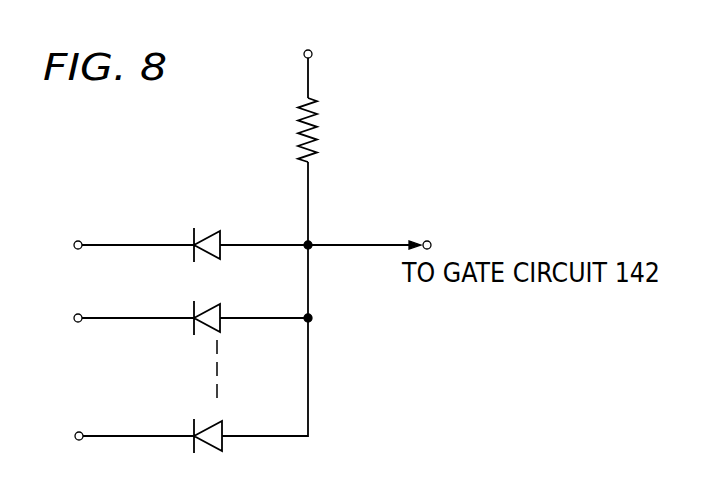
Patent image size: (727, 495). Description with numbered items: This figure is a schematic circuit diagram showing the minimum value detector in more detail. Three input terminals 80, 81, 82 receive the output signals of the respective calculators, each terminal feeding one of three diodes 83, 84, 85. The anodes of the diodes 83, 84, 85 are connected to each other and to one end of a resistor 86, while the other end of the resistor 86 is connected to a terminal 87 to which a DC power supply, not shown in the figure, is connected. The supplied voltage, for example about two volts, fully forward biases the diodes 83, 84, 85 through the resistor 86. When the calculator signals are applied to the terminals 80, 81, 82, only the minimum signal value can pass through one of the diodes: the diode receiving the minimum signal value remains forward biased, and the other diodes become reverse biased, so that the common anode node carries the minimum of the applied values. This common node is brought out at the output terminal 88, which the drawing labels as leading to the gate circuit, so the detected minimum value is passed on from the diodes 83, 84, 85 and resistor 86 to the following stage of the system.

The terminal 80 is at (76, 241).
The terminal 81 is at (78, 312).
The terminal 82 is at (79, 432).
The diode 83 is at (215, 231).
The diode 84 is at (220, 312).
The diode 85 is at (223, 422).
The resistor 86 is at (313, 116).
The terminal 87 is at (312, 54).
The output terminal to gate circuit 88 is at (431, 241).